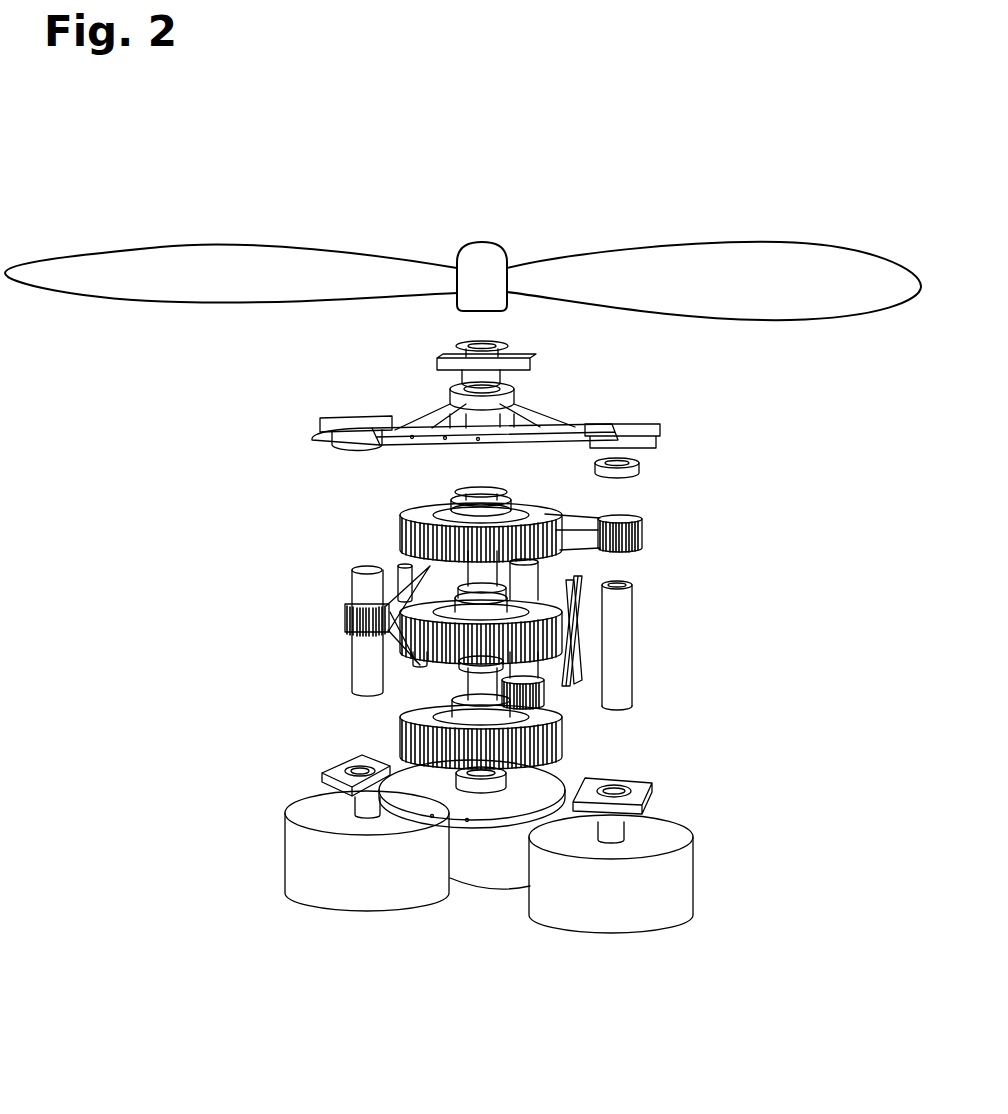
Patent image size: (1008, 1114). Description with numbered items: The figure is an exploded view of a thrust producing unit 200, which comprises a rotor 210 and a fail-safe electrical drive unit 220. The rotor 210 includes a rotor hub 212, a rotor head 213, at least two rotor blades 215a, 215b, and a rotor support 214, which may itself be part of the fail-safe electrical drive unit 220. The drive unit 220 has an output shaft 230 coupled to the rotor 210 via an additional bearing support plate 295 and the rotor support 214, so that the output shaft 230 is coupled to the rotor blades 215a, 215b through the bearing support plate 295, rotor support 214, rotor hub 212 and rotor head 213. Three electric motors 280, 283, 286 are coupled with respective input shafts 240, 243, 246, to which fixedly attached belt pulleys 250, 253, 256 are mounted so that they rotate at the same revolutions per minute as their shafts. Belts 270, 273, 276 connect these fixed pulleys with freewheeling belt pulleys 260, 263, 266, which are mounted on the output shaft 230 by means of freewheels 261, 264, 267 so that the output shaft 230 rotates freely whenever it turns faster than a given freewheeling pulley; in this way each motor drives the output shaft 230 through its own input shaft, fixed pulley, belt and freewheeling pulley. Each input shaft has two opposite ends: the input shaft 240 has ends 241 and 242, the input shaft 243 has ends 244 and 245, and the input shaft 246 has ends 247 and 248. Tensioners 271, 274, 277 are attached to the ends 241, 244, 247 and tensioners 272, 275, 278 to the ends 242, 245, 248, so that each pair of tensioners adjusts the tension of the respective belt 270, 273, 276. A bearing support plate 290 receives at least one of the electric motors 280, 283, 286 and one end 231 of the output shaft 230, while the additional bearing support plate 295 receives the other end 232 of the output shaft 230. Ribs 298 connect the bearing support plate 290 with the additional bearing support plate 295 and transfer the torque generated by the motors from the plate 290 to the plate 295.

The thrust producing unit 200 is at (548, 122).
The rotor 210 is at (557, 236).
The rotor head 213 is at (483, 262).
The rotor blade 215a is at (818, 272).
The rotor blade 215b is at (204, 262).
The rotor hub 212 is at (462, 357).
The rotor support 214 is at (505, 398).
The additional bearing support plate 295 is at (400, 425).
The tensioner 278 is at (342, 437).
The tensioner 275 is at (550, 438).
The tensioner 272 is at (652, 453).
The freewheeling belt pulley 260 is at (440, 516).
The freewheel 261 is at (505, 505).
The end of output shaft 232 is at (460, 484).
The fixedly attached belt pulley 250 is at (645, 520).
The belt 270 is at (643, 533).
The end of input shaft 245 is at (620, 565).
The output shaft 230 is at (470, 560).
The end of output shaft 231 is at (455, 670).
The ribs 298 is at (440, 590).
The freewheel 267 is at (392, 582).
The freewheeling belt pulley 266 is at (418, 672).
The end of input shaft 248 is at (345, 580).
The end of input shaft 247 is at (343, 682).
The input shaft 246 is at (367, 658).
The fixedly attached belt pulley 256 is at (345, 616).
The belt 276 is at (350, 633).
The input shaft 240 is at (620, 616).
The end of input shaft 242 is at (650, 588).
The end of input shaft 241 is at (652, 712).
The belt 273 is at (568, 694).
The input shaft 243 is at (546, 696).
The end of input shaft 244 is at (575, 712).
The freewheeling belt pulley 263 is at (420, 715).
The freewheel 264 is at (513, 760).
The fixedly attached belt pulley 253 is at (652, 787).
The tensioner 277 is at (355, 798).
The tensioner 271 is at (643, 830).
The tensioner 274 is at (565, 772).
The electric motor 286 is at (316, 887).
The electric motor 283 is at (463, 860).
The bearing support plate 290 is at (477, 800).
The electric motor 280 is at (652, 893).
The fail-safe electrical drive unit 220 is at (840, 935).